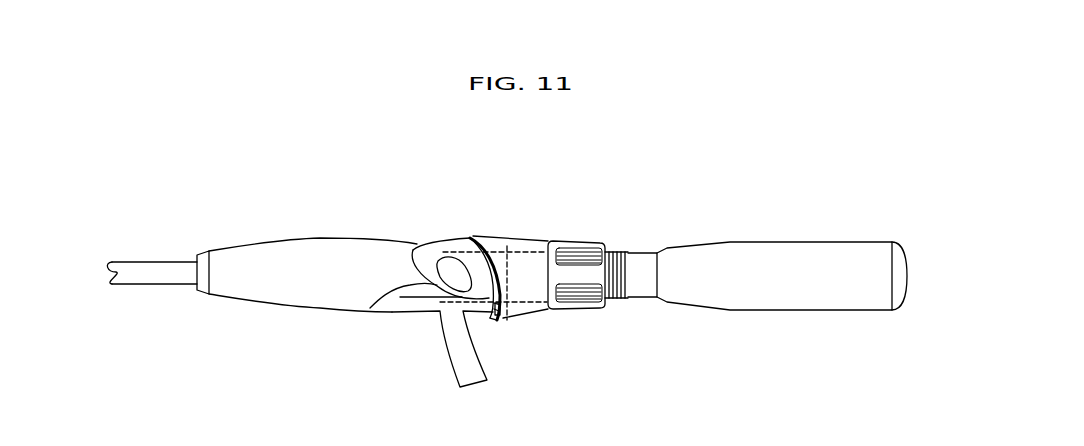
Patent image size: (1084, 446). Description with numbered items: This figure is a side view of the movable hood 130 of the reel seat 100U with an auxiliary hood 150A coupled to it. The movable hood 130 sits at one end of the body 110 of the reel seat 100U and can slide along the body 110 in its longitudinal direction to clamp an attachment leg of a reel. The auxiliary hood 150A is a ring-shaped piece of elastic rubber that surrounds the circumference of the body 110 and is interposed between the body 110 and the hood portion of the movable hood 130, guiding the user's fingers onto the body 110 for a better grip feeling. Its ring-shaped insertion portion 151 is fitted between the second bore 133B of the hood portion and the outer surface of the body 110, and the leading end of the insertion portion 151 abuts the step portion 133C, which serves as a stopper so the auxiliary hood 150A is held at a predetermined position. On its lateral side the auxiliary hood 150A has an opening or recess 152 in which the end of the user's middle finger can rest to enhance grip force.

The body 110 is at (284, 248).
The reel seat 100U is at (338, 238).
The auxiliary hood 150A is at (435, 228).
The opening or recess 152 is at (450, 262).
The second bore 133B is at (483, 248).
The step portion 133C is at (507, 245).
The insertion portion 151 is at (510, 308).
The movable hood 130 is at (537, 231).